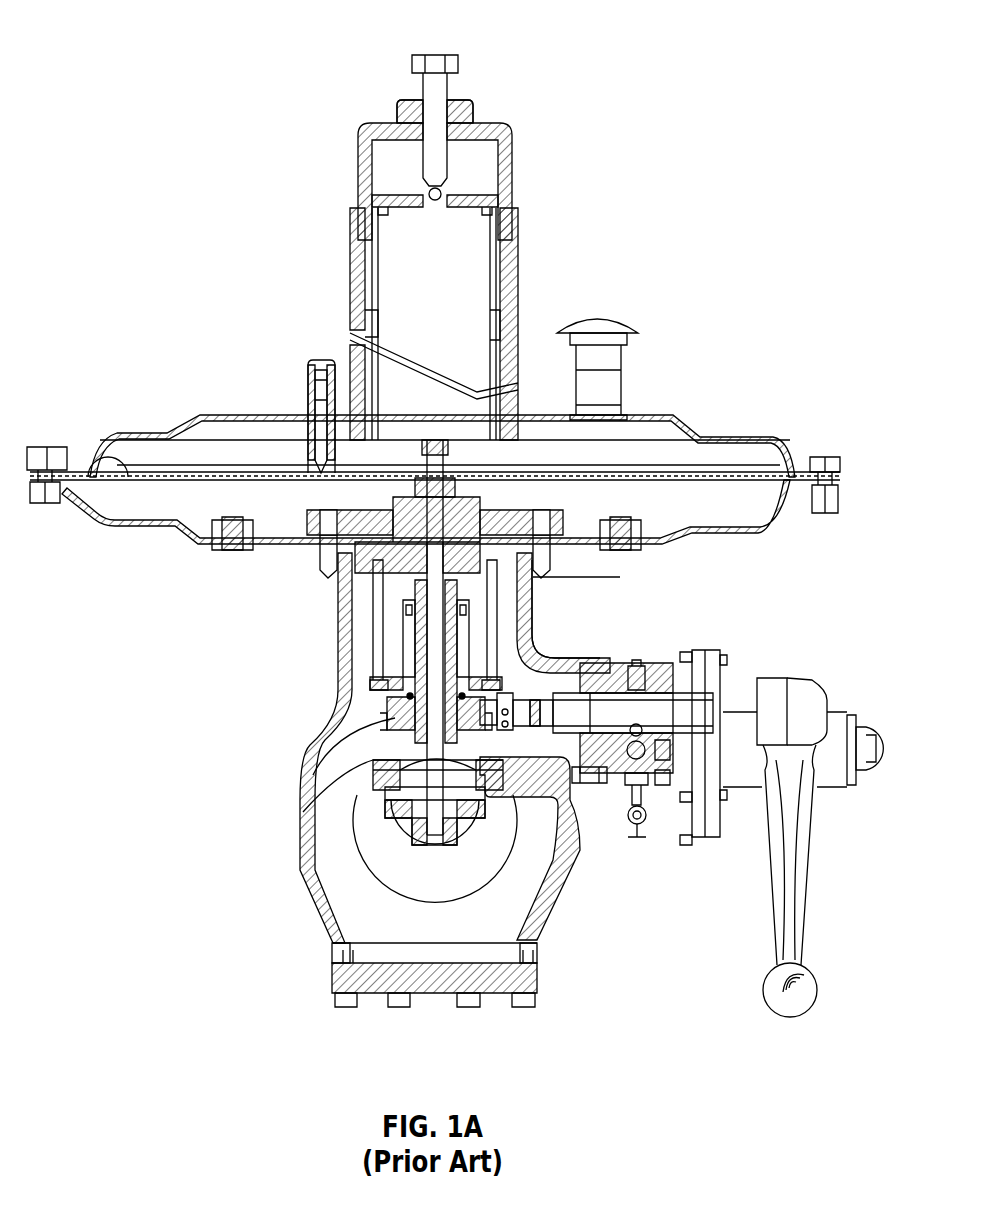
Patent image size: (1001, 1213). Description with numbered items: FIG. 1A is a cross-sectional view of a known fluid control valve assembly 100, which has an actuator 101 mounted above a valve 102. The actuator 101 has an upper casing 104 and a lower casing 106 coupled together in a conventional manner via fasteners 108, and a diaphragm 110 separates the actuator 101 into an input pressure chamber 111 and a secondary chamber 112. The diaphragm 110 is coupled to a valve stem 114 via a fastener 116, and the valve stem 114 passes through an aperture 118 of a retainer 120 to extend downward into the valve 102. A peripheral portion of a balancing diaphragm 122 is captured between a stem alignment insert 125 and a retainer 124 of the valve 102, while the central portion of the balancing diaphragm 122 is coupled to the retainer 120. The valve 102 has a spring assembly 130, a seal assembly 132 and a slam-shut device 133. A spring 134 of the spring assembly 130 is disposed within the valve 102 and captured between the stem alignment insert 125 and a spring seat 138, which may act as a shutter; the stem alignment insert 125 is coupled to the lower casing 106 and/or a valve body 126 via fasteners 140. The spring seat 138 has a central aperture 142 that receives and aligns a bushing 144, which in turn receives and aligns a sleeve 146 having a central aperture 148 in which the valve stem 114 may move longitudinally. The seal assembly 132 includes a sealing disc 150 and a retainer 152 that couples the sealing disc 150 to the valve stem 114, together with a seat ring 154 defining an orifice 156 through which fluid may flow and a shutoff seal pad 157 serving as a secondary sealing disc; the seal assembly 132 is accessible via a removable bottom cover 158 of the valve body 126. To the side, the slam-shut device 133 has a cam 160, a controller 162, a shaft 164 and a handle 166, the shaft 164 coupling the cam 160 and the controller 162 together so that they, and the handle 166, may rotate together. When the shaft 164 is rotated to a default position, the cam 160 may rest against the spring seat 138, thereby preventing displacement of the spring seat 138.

The fluid control valve assembly 100 is at (178, 42).
The actuator 101 is at (736, 343).
The valve 102 is at (657, 640).
The upper casing 104 is at (117, 438).
The lower casing 106 is at (117, 525).
The fasteners 108 is at (830, 462).
The diaphragm 110 is at (107, 463).
The input pressure chamber 111 is at (680, 506).
The secondary chamber 112 is at (720, 452).
The valve stem 114 is at (325, 775).
The fastener 116 is at (423, 450).
The aperture 118 is at (535, 418).
The retainer 120 is at (380, 647).
The balancing diaphragm 122 is at (373, 480).
The retainer 124 is at (555, 470).
The stem alignment insert 125 is at (355, 605).
The valve body 126 is at (540, 600).
The spring assembly 130 is at (507, 588).
The seal assembly 132 is at (491, 838).
The slam-shut device 133 is at (765, 635).
The spring 134 is at (373, 660).
The spring seat 138 is at (457, 657).
The fasteners 140 is at (310, 560).
The central aperture 142 is at (385, 688).
The bushing 144 is at (469, 640).
The sleeve 146 is at (392, 712).
The central aperture 148 is at (385, 726).
The sealing disc 150 is at (373, 790).
The retainer 152 is at (393, 812).
The seat ring 154 is at (490, 728).
The orifice 156 is at (385, 792).
The shutoff seal pad 157 is at (500, 745).
The removable bottom cover 158 is at (435, 995).
The cam 160 is at (590, 665).
The controller 162 is at (695, 838).
The shaft 164 is at (740, 718).
The handle 166 is at (782, 870).